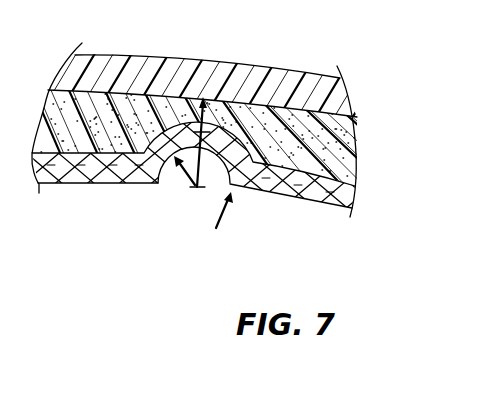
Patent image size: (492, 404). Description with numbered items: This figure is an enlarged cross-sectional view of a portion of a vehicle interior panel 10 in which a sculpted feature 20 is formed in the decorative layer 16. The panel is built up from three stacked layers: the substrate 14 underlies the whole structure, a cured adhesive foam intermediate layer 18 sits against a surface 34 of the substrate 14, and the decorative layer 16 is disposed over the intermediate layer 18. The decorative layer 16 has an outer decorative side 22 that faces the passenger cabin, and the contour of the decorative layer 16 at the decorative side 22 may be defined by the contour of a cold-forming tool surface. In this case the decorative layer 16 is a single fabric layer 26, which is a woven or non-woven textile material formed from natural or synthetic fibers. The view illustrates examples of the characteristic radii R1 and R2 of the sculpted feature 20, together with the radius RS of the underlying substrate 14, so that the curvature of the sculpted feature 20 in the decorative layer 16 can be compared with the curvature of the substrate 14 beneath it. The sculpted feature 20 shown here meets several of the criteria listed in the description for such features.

The vehicle interior panel 10 is at (323, 40).
The substrate 14 is at (347, 102).
The cured adhesive foam intermediate layer 18 is at (355, 151).
The decorative layer 16 is at (352, 201).
The sculpted feature 20 is at (189, 327).
The decorative side 22 is at (116, 186).
The fabric layer 26 is at (305, 197).
The surface of the substrate 34 is at (126, 93).
The substrate radius RS is at (198, 133).
The characteristic radius R1 is at (216, 228).
The characteristic radius R2 is at (183, 167).